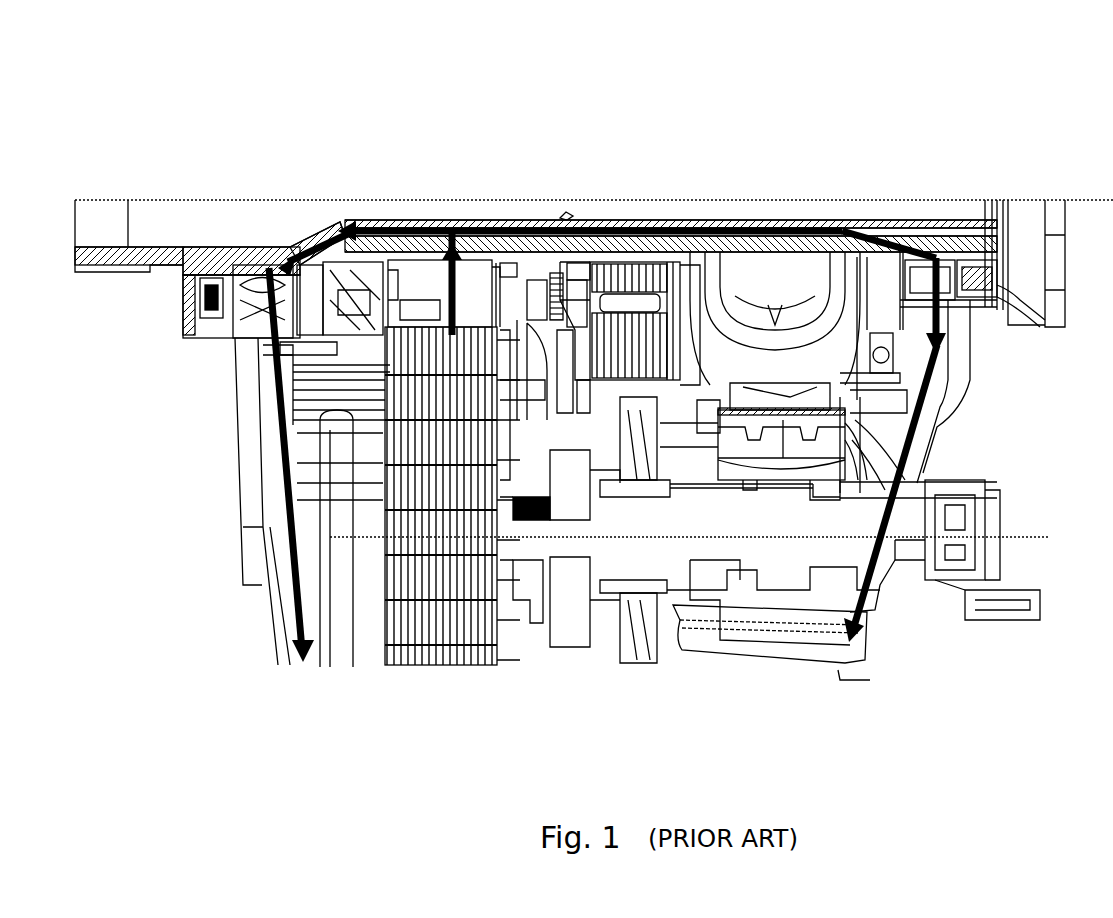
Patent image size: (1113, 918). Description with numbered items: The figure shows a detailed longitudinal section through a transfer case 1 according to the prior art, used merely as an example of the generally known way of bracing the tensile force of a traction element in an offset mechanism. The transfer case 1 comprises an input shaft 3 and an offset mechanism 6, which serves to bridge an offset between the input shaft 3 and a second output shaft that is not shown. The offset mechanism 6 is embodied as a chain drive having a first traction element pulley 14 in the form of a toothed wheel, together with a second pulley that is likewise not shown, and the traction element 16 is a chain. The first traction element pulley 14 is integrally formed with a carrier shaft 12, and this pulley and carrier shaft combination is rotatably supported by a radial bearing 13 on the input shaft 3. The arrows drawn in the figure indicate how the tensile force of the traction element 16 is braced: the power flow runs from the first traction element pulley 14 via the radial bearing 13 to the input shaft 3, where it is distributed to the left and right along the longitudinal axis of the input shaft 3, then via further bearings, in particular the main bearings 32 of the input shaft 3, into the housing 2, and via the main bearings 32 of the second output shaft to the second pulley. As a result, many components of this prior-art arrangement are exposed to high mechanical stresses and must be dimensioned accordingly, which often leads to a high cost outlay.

The transfer case 1 is at (208, 601).
The housing 2 is at (953, 392).
The input shaft 3 is at (845, 220).
The offset mechanism 6 is at (497, 212).
The carrier shaft 12 is at (497, 277).
The radial bearing 13 is at (395, 220).
The first traction element pulley 14 is at (430, 308).
The traction element 16 is at (385, 628).
The main bearings 32 is at (208, 320).